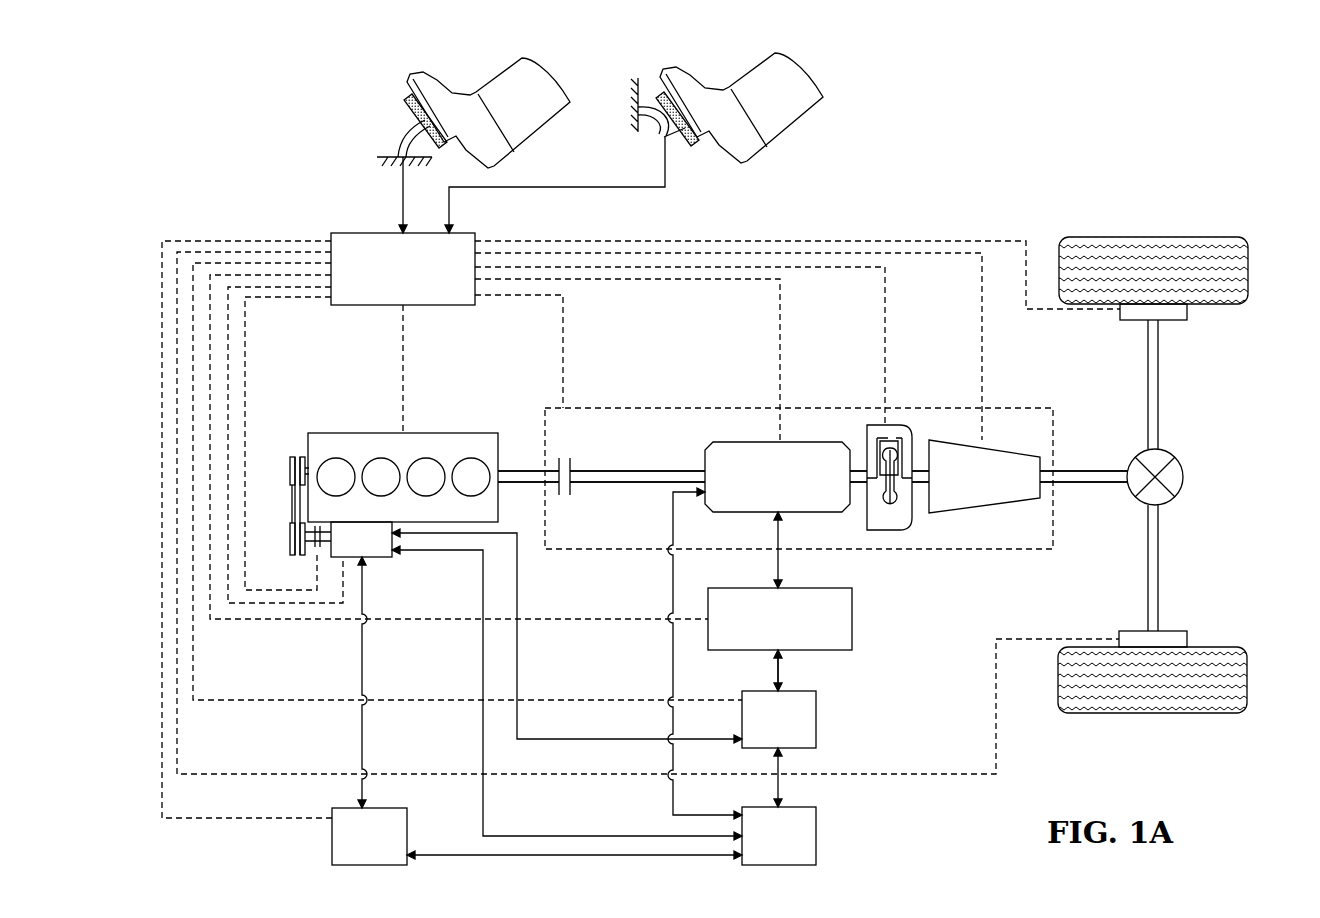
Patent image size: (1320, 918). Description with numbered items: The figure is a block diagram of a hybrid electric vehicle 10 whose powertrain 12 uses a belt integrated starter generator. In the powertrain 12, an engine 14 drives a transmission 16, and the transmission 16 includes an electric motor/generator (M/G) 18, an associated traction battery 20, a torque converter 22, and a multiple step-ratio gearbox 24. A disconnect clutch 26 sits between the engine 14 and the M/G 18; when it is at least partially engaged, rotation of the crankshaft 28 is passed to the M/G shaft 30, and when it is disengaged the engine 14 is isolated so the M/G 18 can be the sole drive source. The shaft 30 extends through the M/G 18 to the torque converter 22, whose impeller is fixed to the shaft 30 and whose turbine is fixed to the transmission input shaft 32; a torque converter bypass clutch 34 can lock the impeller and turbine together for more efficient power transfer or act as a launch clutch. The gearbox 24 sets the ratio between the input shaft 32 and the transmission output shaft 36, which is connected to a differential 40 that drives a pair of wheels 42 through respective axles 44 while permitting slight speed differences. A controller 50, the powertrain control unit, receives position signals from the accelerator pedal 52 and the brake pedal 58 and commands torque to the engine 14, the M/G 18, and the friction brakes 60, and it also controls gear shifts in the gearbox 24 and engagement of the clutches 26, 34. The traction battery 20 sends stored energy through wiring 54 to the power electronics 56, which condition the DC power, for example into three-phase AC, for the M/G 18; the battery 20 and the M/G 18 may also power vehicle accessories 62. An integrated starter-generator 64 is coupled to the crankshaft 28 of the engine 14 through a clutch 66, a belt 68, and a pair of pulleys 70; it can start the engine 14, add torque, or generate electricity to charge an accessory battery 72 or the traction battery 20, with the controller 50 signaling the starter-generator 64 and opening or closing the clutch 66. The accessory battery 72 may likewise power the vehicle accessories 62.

The hybrid electric vehicle 10 is at (881, 159).
The powertrain 12 is at (459, 654).
The engine 14 is at (360, 433).
The transmission 16 is at (845, 408).
The electric motor/generator (M/G) 18 is at (748, 442).
The traction battery 20 is at (816, 722).
The torque converter 22 is at (885, 532).
The gearbox 24 is at (985, 513).
The disconnect clutch 26 is at (571, 460).
The crankshaft 28 is at (306, 468).
The M/G shaft 30 is at (660, 470).
The transmission input shaft 32 is at (920, 470).
The torque converter bypass clutch 34 is at (888, 428).
The transmission output shaft 36 is at (1072, 470).
The differential 40 is at (1184, 470).
The wheels 42 is at (1153, 237).
The axles 44 is at (1160, 380).
The controller 50 is at (367, 233).
The accelerator pedal 52 is at (410, 105).
The wiring 54 is at (770, 672).
The power electronics 56 is at (852, 620).
The brake pedal 58 is at (700, 150).
The friction brakes 60 is at (1187, 312).
The vehicle accessories 62 is at (816, 836).
The integrated starter-generator (ISG) 64 is at (375, 560).
The clutch 66 is at (300, 555).
The belt 68 is at (290, 513).
The pulleys 70 is at (290, 475).
The accessory battery 72 is at (407, 833).